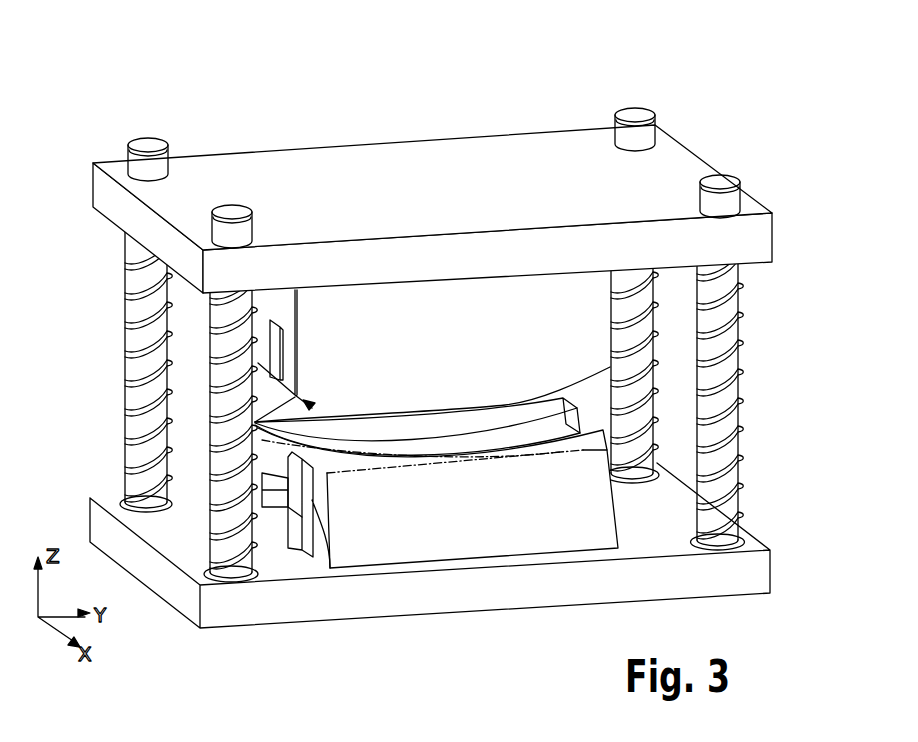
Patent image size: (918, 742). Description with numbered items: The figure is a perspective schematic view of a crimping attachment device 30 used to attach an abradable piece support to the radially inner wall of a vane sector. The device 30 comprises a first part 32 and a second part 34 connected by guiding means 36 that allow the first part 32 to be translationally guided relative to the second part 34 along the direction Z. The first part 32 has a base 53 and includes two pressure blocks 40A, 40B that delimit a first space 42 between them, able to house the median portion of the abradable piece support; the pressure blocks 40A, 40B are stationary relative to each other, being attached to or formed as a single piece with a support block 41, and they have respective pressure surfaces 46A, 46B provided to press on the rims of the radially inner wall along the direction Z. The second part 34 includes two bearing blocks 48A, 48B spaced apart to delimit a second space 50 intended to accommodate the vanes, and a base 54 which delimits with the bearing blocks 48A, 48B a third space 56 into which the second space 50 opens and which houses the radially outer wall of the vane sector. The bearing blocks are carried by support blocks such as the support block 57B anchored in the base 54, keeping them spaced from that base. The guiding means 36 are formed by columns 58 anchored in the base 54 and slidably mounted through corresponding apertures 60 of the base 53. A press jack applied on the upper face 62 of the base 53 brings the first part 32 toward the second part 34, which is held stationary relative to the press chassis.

The crimping attachment device 30 is at (740, 140).
The first part 32 is at (362, 130).
The second part 34 is at (540, 607).
The guiding means 36 is at (745, 330).
The pressure block 40A is at (260, 332).
The pressure block 40B is at (295, 322).
The support block 41 is at (428, 300).
The first space 42 is at (255, 422).
The pressure surface 46A is at (255, 393).
The pressure surface 46B is at (312, 406).
The bearing block 48A is at (278, 460).
The bearing block 48B is at (318, 555).
The second space 50 is at (282, 474).
The base 53 is at (728, 237).
The base 54 is at (705, 577).
The third space 56 is at (305, 526).
The support block 57B is at (367, 540).
The column 58 is at (723, 427).
The aperture 60 is at (620, 132).
The upper face 62 is at (537, 170).